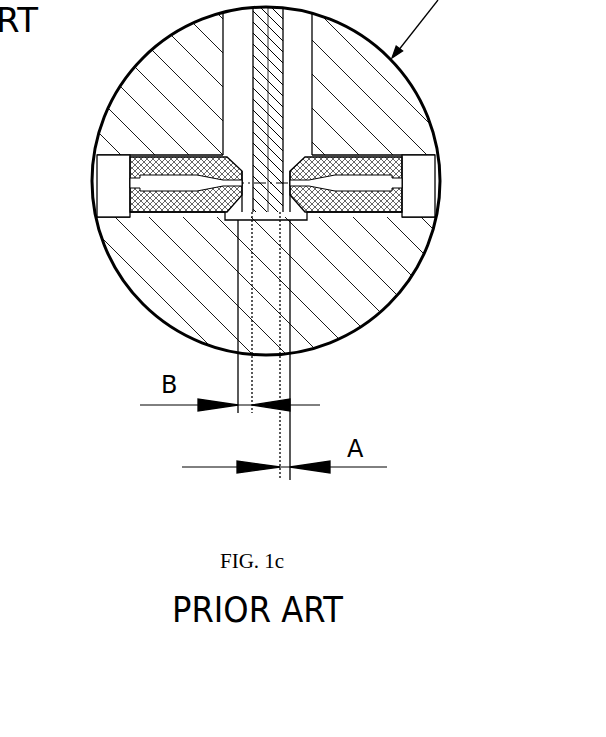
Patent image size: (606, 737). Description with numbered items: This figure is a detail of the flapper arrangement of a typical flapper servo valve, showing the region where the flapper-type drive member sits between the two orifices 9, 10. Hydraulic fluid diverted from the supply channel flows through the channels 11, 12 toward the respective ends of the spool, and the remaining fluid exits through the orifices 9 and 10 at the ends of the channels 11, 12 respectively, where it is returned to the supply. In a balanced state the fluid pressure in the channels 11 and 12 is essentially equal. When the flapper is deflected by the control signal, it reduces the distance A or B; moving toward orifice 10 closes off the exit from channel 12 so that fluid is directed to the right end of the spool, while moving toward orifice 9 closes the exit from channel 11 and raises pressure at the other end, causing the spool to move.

The orifice 9 is at (238, 178).
The orifice 10 is at (292, 176).
The channel 11 is at (112, 198).
The channel 12 is at (425, 200).